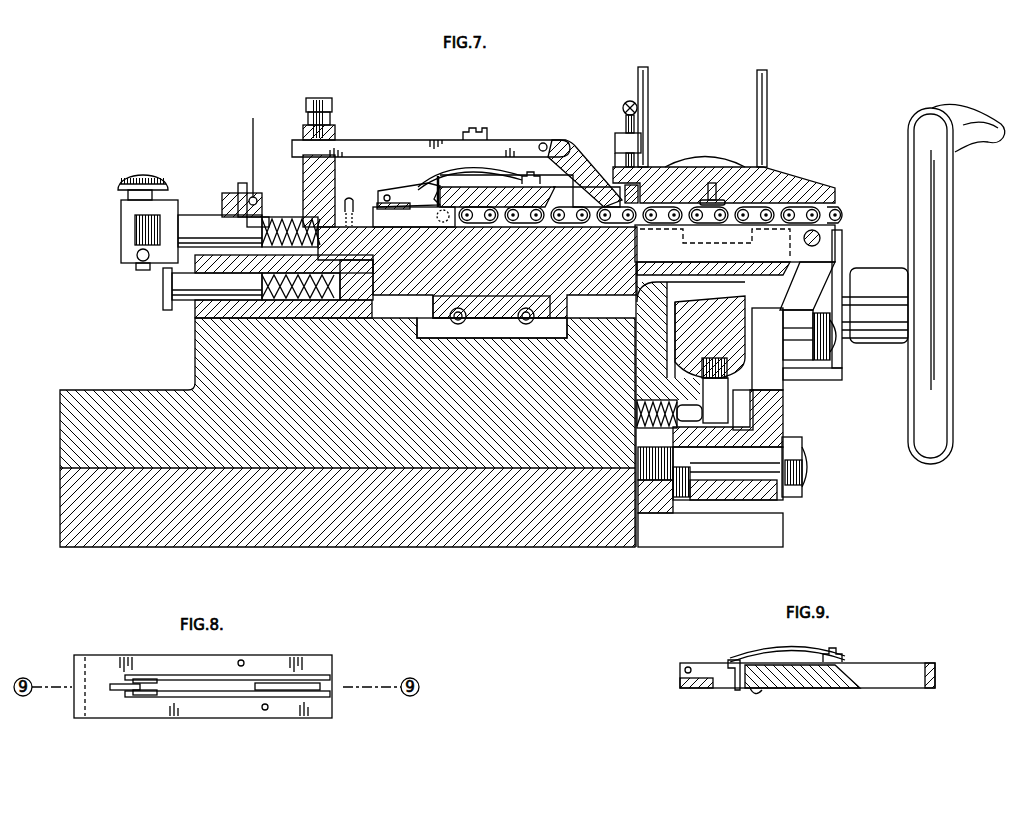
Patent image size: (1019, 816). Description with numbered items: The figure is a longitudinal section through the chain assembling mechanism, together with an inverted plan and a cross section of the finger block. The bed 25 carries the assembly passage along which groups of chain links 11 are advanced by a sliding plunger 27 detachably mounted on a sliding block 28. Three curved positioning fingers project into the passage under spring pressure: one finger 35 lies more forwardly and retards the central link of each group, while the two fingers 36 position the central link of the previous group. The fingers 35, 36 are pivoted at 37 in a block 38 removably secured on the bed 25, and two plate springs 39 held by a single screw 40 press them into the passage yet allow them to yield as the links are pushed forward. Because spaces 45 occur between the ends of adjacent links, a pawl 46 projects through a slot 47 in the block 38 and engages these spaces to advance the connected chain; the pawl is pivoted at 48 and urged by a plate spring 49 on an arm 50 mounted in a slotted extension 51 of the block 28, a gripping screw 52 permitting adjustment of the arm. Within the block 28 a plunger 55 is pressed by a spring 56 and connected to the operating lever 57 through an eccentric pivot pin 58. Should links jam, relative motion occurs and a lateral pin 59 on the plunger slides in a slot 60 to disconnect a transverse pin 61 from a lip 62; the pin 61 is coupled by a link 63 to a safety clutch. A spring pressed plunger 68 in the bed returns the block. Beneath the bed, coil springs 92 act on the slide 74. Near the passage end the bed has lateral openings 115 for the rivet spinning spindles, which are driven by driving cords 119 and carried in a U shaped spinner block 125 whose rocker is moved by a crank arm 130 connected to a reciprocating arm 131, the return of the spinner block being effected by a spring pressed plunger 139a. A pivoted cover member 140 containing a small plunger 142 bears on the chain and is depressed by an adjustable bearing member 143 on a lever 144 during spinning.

In FIG. 7, the chain links 11 is at (842, 212).
In FIG. 7, the bed 25 is at (345, 312).
In FIG. 7, the sliding plunger 27 is at (414, 215).
In FIG. 7, the sliding block 28 is at (338, 212).
In FIG. 7, the positioning finger 35 is at (420, 194).
In FIG. 8, the positioning finger 35 is at (125, 690).
In FIG. 9, the positioning finger 35 is at (728, 690).
In FIG. 8, the positioning fingers 36 is at (152, 684).
In FIG. 9, the positioning fingers 36 is at (758, 694).
In FIG. 9, the pivot 37 is at (680, 670).
In FIG. 7, the block 38 is at (500, 196).
In FIG. 8, the block 38 is at (268, 664).
In FIG. 9, the block 38 is at (815, 690).
In FIG. 9, the plate springs 39 is at (778, 655).
In FIG. 9, the screw 40 is at (842, 655).
In FIG. 7, the spaces 45 is at (668, 226).
In FIG. 7, the pawl 46 is at (573, 165).
In FIG. 7, the slot 47 is at (585, 200).
In FIG. 8, the slot 47 is at (292, 692).
In FIG. 9, the slot 47 is at (878, 680).
In FIG. 7, the pivot 48 is at (543, 143).
In FIG. 7, the plate spring 49 is at (486, 136).
In FIG. 7, the arm 50 is at (411, 150).
In FIG. 7, the slotted extension 51 is at (322, 170).
In FIG. 7, the gripping screw 52 is at (318, 98).
In FIG. 7, the plunger 55 is at (200, 226).
In FIG. 7, the spring 56 is at (288, 258).
In FIG. 7, the operating lever 57 is at (130, 232).
In FIG. 7, the eccentric pivot pin 58 is at (138, 185).
In FIG. 7, the lateral pin 59 is at (238, 190).
In FIG. 7, the slot 60 is at (258, 216).
In FIG. 7, the transverse pin 61 is at (262, 205).
In FIG. 7, the lip 62 is at (257, 198).
In FIG. 7, the link 63 is at (253, 127).
In FIG. 7, the spring pressed plunger 68 is at (185, 284).
In FIG. 7, the slide 74 is at (494, 322).
In FIG. 7, the coil springs 92 is at (458, 326).
In FIG. 7, the lateral openings 115 is at (715, 243).
In FIG. 7, the driving cords 119 is at (767, 83).
In FIG. 7, the spinner block 125 is at (728, 315).
In FIG. 7, the crank arm 130 is at (770, 380).
In FIG. 7, the arm 131 is at (807, 286).
In FIG. 7, the spring pressed plunger 139a is at (637, 398).
In FIG. 7, the cover member 140 is at (790, 184).
In FIG. 7, the small plunger 142 is at (714, 183).
In FIG. 7, the adjustable bearing member 143 is at (623, 110).
In FIG. 7, the lever 144 is at (638, 143).